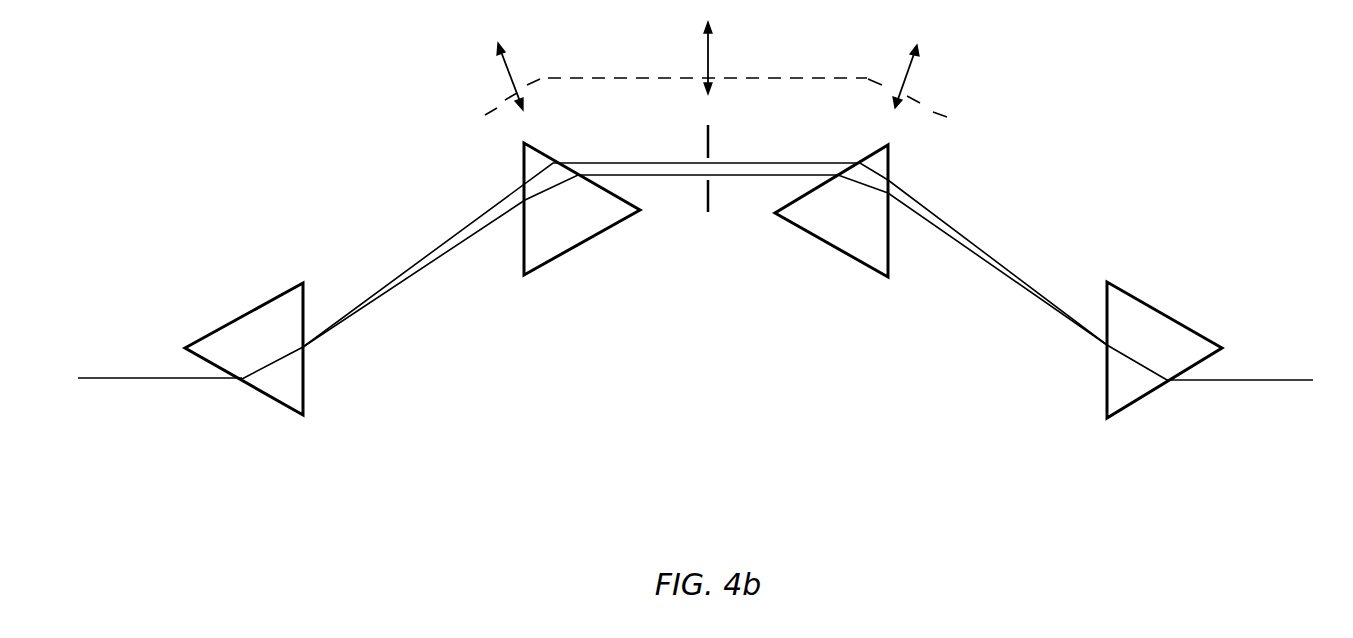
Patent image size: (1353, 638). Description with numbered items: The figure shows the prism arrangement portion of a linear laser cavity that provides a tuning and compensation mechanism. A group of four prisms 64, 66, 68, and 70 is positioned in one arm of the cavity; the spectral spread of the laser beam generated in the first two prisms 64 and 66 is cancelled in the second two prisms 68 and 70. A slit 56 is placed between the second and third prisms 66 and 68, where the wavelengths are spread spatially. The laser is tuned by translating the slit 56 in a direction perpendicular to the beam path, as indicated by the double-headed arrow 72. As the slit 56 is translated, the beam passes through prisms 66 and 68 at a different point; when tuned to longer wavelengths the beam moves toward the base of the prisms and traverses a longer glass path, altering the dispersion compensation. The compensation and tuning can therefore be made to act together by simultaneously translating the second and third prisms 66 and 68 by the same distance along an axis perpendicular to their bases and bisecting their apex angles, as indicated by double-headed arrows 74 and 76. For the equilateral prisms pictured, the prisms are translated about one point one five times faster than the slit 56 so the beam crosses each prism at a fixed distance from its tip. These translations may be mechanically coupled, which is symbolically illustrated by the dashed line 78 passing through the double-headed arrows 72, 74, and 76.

The slit 56 is at (707, 202).
The prism 64 is at (1132, 292).
The prism 66 is at (842, 252).
The prism 68 is at (553, 260).
The prism 70 is at (285, 408).
The double-headed arrow 72 is at (706, 56).
The double-headed arrow 74 is at (504, 60).
The double-headed arrow 76 is at (914, 70).
The dashed line 78 is at (803, 76).